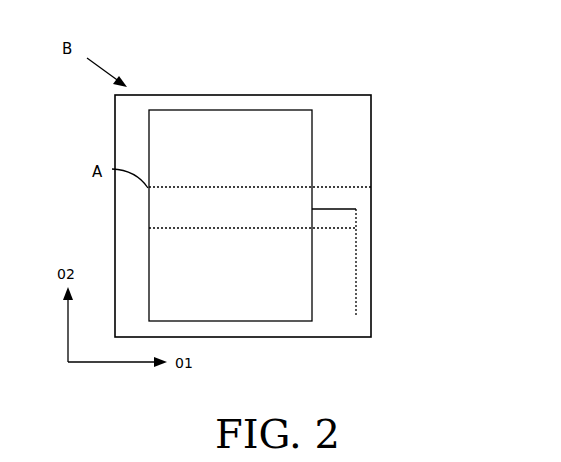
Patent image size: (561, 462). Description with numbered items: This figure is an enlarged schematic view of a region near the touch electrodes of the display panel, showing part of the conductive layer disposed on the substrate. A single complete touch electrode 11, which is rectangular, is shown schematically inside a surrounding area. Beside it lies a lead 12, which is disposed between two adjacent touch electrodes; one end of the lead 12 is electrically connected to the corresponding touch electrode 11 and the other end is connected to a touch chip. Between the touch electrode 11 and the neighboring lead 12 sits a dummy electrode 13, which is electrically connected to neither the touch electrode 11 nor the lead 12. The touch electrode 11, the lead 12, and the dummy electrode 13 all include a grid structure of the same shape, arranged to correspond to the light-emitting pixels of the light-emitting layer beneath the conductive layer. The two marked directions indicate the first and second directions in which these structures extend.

The touch electrode 11 is at (224, 110).
The lead 12 is at (356, 212).
The dummy electrode 13 is at (340, 157).